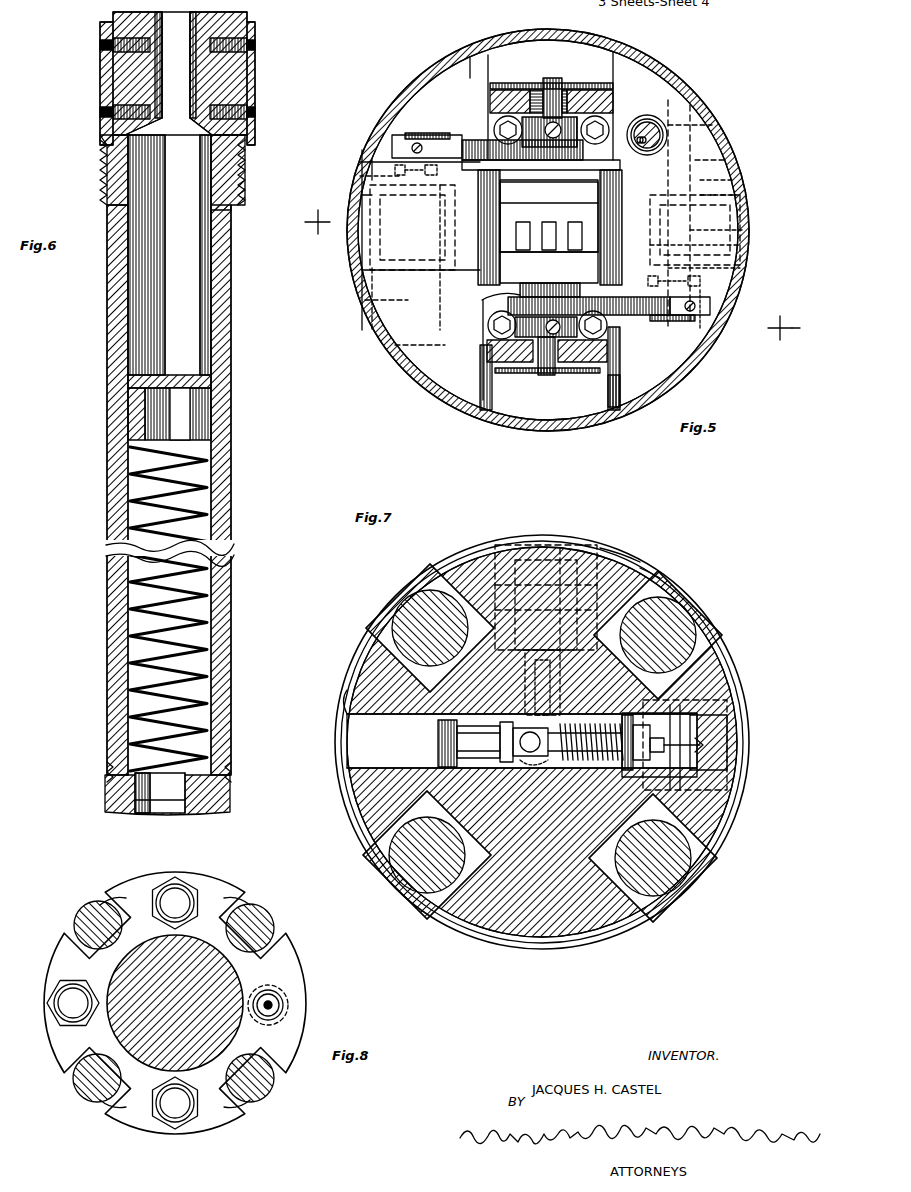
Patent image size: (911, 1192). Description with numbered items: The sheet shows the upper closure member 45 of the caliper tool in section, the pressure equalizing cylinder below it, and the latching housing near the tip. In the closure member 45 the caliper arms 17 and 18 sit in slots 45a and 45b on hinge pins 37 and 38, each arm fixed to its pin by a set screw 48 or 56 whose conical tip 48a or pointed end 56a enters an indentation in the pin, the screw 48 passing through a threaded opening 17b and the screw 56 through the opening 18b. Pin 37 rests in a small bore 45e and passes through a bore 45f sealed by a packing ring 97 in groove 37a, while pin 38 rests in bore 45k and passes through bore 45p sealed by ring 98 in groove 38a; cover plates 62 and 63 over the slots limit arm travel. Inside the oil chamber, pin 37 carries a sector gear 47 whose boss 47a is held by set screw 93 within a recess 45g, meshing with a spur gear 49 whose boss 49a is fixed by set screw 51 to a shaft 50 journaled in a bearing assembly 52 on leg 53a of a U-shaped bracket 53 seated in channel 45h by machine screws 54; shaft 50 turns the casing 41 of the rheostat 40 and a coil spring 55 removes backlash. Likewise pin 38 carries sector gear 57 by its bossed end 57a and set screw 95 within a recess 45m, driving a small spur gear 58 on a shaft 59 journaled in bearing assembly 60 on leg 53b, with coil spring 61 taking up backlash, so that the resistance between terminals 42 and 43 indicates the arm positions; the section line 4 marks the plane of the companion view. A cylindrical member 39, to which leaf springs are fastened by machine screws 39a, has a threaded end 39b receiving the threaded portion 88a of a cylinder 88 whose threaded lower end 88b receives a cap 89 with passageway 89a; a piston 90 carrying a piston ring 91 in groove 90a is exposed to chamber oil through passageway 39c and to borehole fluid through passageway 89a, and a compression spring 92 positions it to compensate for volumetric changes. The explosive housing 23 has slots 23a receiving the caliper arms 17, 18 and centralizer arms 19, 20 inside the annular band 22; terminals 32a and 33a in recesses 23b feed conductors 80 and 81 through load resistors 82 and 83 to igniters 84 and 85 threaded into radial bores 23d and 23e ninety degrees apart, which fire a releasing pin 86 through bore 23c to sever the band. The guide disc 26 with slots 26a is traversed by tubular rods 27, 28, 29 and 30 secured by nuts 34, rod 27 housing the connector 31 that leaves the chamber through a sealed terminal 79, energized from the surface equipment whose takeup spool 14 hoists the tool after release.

In FIG. 5, the section line 4 is at (548, 275).
In FIG. 5, the takeup spool 14 is at (791, 340).
In FIG. 5, the caliper arm 17 is at (360, 256).
In FIG. 7, the caliper arm 17 is at (418, 882).
In FIG. 8, the caliper arm 17 is at (84, 1092).
In FIG. 7, the caliper arm 18 is at (672, 612).
In FIG. 8, the caliper arm 18 is at (262, 920).
In FIG. 7, the centralizer arm 19 is at (426, 592).
In FIG. 8, the centralizer arm 19 is at (98, 904).
In FIG. 7, the centralizer arm 20 is at (680, 876).
In FIG. 8, the centralizer arm 20 is at (264, 1084).
In FIG. 5, the internally threaded opening 17b is at (360, 198).
In FIG. 5, the column bore 18b is at (742, 206).
In FIG. 7, the annular band 22 is at (347, 755).
In FIG. 7, the explosive containing housing 23 is at (552, 932).
In FIG. 7, the longitudinal slots 23a is at (384, 618).
In FIG. 7, the recesses 23b is at (532, 548).
In FIG. 7, the radial bore 23c is at (345, 732).
In FIG. 7, the internally threaded radial bore 23d is at (560, 770).
In FIG. 7, the internally threaded radial bore 23e is at (525, 686).
In FIG. 8, the guide disc 26 is at (148, 880).
In FIG. 8, the slots 26a is at (128, 898).
In FIG. 8, the tubular member 27 is at (284, 998).
In FIG. 8, the tubular member 28 is at (188, 890).
In FIG. 8, the tubular member 29 is at (68, 996).
In FIG. 8, the tubular member 30 is at (180, 1120).
In FIG. 5, the connector 31 is at (655, 146).
In FIG. 8, the connector 31 is at (290, 992).
In FIG. 7, the terminal 32a is at (572, 546).
In FIG. 7, the terminal 33a is at (702, 748).
In FIG. 8, the nuts 34 is at (176, 882).
In FIG. 5, the hinge pin 37 is at (371, 297).
In FIG. 5, the annular groove 37a is at (358, 162).
In FIG. 5, the hinge pin 38 is at (700, 140).
In FIG. 5, the peripheral groove 38a is at (712, 262).
In FIG. 6, the cylindrical housing 39 is at (232, 14).
In FIG. 6, the machine screws 39a is at (108, 110).
In FIG. 6, the internally threaded end portion 39b is at (100, 162).
In FIG. 6, the passageway 39c is at (192, 46).
In FIG. 5, the potentiometer 40 is at (478, 300).
In FIG. 5, the casing 41 is at (483, 260).
In FIG. 5, the output terminal 42 is at (522, 222).
In FIG. 5, the output terminal 43 is at (552, 222).
In FIG. 5, the closure member 45 is at (660, 62).
In FIG. 5, the longitudinal slot 45a is at (360, 190).
In FIG. 5, the longitudinal slot 45b is at (742, 190).
In FIG. 5, the small bore 45e is at (395, 344).
In FIG. 5, the bore 45f is at (368, 160).
In FIG. 5, the recess 45g is at (470, 58).
In FIG. 5, the channel 45h is at (594, 57).
In FIG. 5, the horizontal bore 45k is at (715, 160).
In FIG. 5, the recess 45m is at (690, 362).
In FIG. 5, the bore 45p is at (742, 284).
In FIG. 5, the sector gear 47 is at (452, 146).
In FIG. 5, the raised circular boss 47a is at (440, 132).
In FIG. 5, the set screw 48 is at (368, 238).
In FIG. 5, the conically shaped tip 48a is at (400, 220).
In FIG. 5, the spur gear 49 is at (604, 156).
In FIG. 5, the circular boss 49a is at (652, 116).
In FIG. 5, the shaft 50 is at (556, 78).
In FIG. 5, the set screw 51 is at (552, 125).
In FIG. 5, the bearing assembly 52 is at (585, 118).
In FIG. 5, the U-shaped bracket 53 is at (498, 98).
In FIG. 5, the upright leg 53a is at (512, 85).
In FIG. 5, the upright leg 53b is at (618, 366).
In FIG. 5, the machine screws 54 is at (494, 132).
In FIG. 5, the spiral coil spring 55 is at (575, 88).
In FIG. 5, the set screw 56 is at (745, 230).
In FIG. 5, the pointed end portion 56a is at (700, 226).
In FIG. 5, the sector gear 57 is at (645, 325).
In FIG. 5, the bossed end 57a is at (698, 354).
In FIG. 5, the small spur gear 58 is at (482, 312).
In FIG. 5, the shaft 59 is at (546, 372).
In FIG. 5, the bearing assembly 60 is at (612, 350).
In FIG. 5, the spiral coil spring 61 is at (525, 372).
In FIG. 5, the cover plate 62 is at (380, 276).
In FIG. 5, the cover plate 63 is at (718, 178).
In FIG. 5, the terminal 79 is at (660, 118).
In FIG. 7, the conductor 80 is at (594, 558).
In FIG. 7, the conductor 81 is at (695, 735).
In FIG. 7, the load resistor 82 is at (636, 572).
In FIG. 7, the load resistor 83 is at (650, 744).
In FIG. 7, the igniter 84 is at (562, 686).
In FIG. 7, the igniter 85 is at (592, 730).
In FIG. 7, the releasing pin 86 is at (438, 742).
In FIG. 6, the cylindrical member 88 is at (222, 246).
In FIG. 6, the externally threaded portion 88a is at (135, 164).
In FIG. 6, the internally threaded lower end 88b is at (112, 764).
In FIG. 6, the cap member 89 is at (122, 806).
In FIG. 6, the passageway 89a is at (150, 810).
In FIG. 6, the piston 90 is at (178, 384).
In FIG. 6, the annular groove 90a is at (128, 378).
In FIG. 6, the piston ring 91 is at (130, 392).
In FIG. 6, the compression spring 92 is at (205, 504).
In FIG. 5, the set screw 93 is at (418, 143).
In FIG. 5, the set screw 95 is at (710, 320).
In FIG. 5, the O-shaped packing ring 97 is at (438, 172).
In FIG. 5, the sealing ring 98 is at (648, 280).